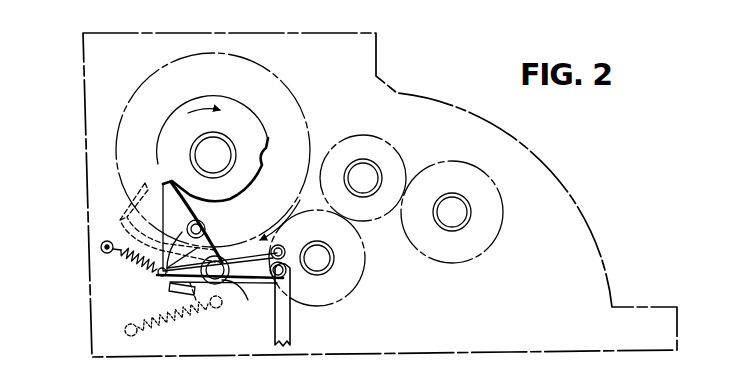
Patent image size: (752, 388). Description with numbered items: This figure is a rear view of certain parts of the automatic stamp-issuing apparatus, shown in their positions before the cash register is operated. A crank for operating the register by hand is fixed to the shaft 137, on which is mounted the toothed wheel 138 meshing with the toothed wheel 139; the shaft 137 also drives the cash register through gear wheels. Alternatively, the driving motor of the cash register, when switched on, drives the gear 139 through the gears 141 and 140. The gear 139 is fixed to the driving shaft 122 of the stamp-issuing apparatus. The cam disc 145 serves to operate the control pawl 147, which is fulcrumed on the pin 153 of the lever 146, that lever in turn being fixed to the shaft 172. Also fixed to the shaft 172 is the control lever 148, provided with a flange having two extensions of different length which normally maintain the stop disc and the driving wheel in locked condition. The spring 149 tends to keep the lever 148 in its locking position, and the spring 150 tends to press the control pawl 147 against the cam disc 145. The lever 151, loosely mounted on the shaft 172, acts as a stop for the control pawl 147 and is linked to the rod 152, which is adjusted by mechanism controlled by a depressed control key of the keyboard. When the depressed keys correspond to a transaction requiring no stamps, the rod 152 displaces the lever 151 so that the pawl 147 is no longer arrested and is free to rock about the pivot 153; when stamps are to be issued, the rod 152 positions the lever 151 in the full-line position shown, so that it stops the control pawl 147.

The driving shaft 122 is at (230, 160).
The shaft 137 is at (322, 262).
The toothed wheel 138 is at (367, 273).
The toothed wheel 139 is at (297, 107).
The gear 140 is at (396, 147).
The gear 141 is at (500, 233).
The cam disc 145 is at (185, 110).
The lever 146 is at (262, 237).
The control pawl 147 is at (163, 200).
The control lever 148 is at (118, 220).
The spring 149 is at (186, 322).
The spring 150 is at (138, 260).
The lever 151 is at (178, 290).
The rod 152 is at (291, 327).
The pin 153 is at (197, 244).
The shaft 172 is at (230, 284).